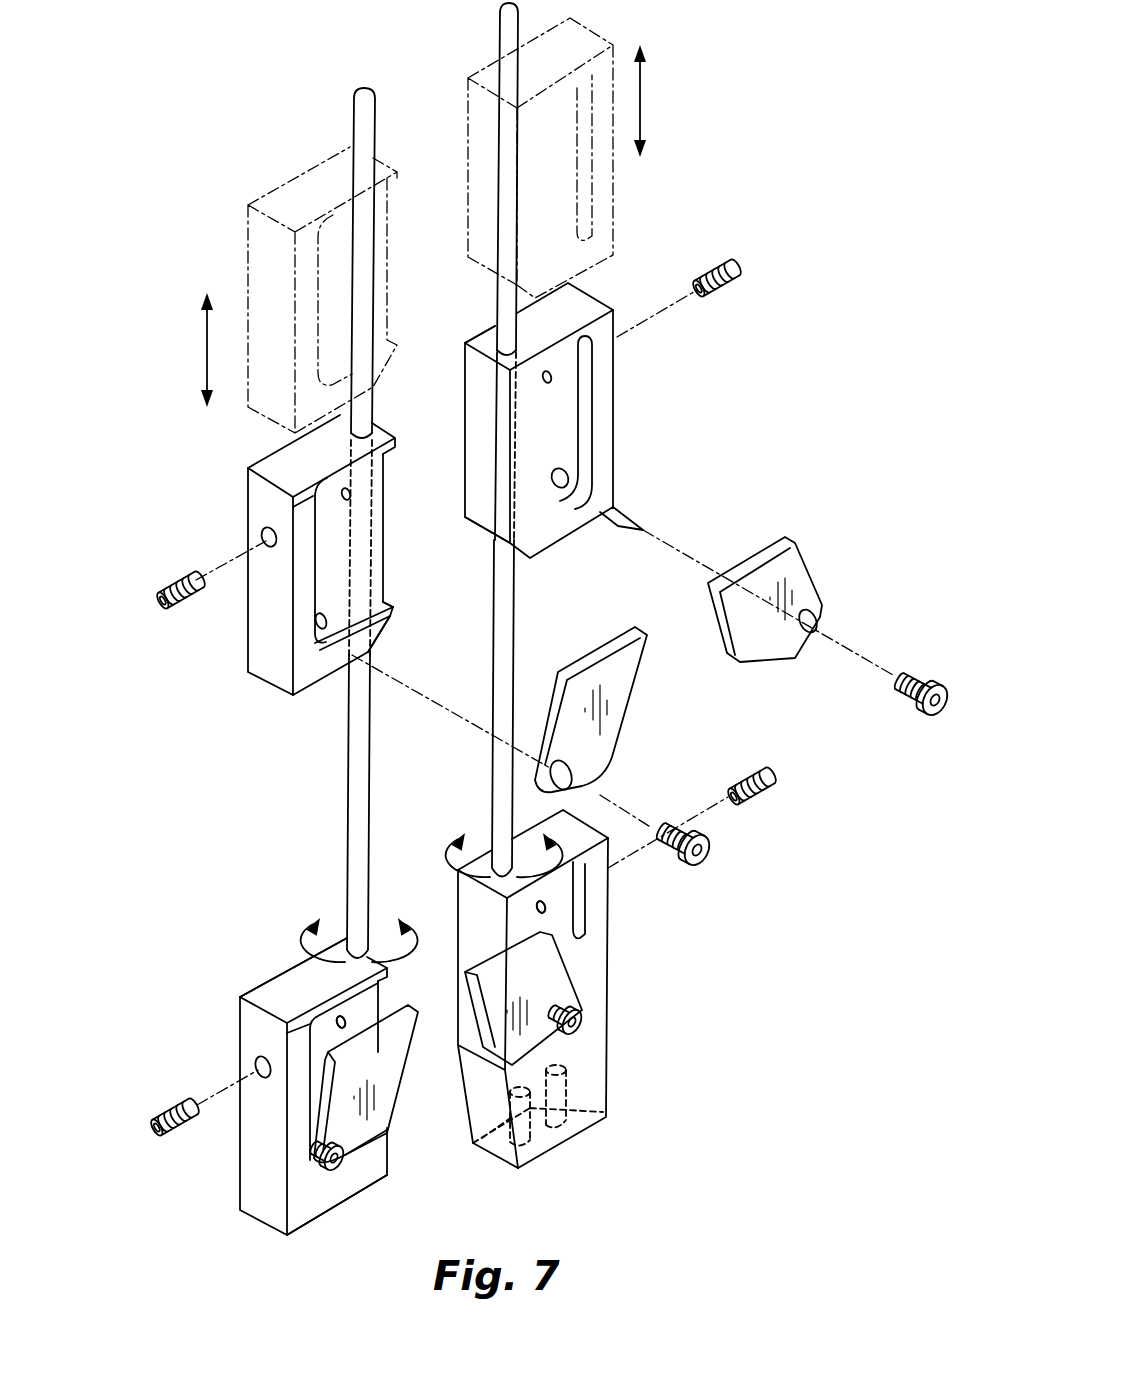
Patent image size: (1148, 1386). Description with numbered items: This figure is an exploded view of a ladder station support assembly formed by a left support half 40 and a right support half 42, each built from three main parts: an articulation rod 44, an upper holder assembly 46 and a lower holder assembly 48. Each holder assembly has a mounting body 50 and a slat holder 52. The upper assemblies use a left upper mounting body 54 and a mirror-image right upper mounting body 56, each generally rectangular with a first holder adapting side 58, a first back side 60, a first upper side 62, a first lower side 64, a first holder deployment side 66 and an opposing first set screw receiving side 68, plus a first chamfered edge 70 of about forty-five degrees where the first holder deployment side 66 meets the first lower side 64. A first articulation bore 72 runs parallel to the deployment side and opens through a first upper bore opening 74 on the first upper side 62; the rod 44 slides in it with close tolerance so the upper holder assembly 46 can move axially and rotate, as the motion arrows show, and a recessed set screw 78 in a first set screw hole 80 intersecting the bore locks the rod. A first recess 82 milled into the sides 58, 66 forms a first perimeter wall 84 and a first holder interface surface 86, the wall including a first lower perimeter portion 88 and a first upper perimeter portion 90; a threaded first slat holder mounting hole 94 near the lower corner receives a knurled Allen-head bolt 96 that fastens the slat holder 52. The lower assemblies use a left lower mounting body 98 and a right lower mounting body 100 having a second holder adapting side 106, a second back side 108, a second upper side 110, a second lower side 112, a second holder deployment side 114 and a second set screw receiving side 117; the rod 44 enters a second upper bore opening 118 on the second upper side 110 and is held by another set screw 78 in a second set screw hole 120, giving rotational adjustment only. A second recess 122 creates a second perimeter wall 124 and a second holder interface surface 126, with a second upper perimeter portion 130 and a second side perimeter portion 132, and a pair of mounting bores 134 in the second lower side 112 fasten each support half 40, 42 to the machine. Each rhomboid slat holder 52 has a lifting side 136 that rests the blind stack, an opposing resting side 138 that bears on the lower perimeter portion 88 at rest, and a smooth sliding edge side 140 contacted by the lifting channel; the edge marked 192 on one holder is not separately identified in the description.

The left support half 40 is at (160, 553).
The right support half 42 is at (576, 422).
The articulation rod 44 is at (520, 639).
The upper holder assembly 46 is at (195, 673).
The lower holder assembly 48 is at (188, 1194).
The mounting body 50 is at (492, 780).
The slat holder 52 is at (610, 827).
The left upper mounting body 54 is at (420, 516).
The right upper mounting body 56 is at (540, 479).
The first holder adapting side 58 is at (640, 527).
The first back side 60 is at (268, 455).
The first upper side 62 is at (262, 466).
The first lower side 64 is at (320, 680).
The first holder deployment side 66 is at (478, 440).
The first set screw receiving side 68 is at (262, 617).
The first chamfered edge 70 is at (392, 617).
The first articulation bore 72 is at (507, 392).
The top wall 74 is at (495, 338).
The set screw 78 is at (180, 612).
The first set screw hole 80 is at (262, 537).
The first recess 82 is at (533, 452).
The first perimeter wall 84 is at (613, 393).
The first holder interface surface 86 is at (321, 560).
The first lower perimeter portion 88 is at (362, 622).
The first upper perimeter portion 90 is at (606, 356).
The first slat holder mounting hole 94 is at (368, 660).
The bolt 96 is at (920, 702).
The left lower mounting body 98 is at (424, 1080).
The right lower mounting body 100 is at (455, 1028).
The second holder adapting side 106 is at (298, 1212).
The second back side 108 is at (462, 868).
The second upper side 110 is at (302, 962).
The second lower side 112 is at (272, 1232).
The second holder deployment side 114 is at (460, 993).
The second set screw receiving side 117 is at (247, 1142).
The second upper bore opening 118 is at (302, 975).
The second set screw hole 120 is at (252, 1062).
The second recess 122 is at (322, 1027).
The second perimeter wall 124 is at (603, 960).
The second holder interface surface 126 is at (341, 1022).
The second upper perimeter portion 130 is at (613, 902).
The second side perimeter portion 132 is at (563, 1003).
The mounting bores 134 is at (552, 1124).
The lifting side 136 is at (807, 577).
The resting side 138 is at (822, 598).
The sliding edge side 140 is at (634, 688).
The plate 192 is at (782, 660).